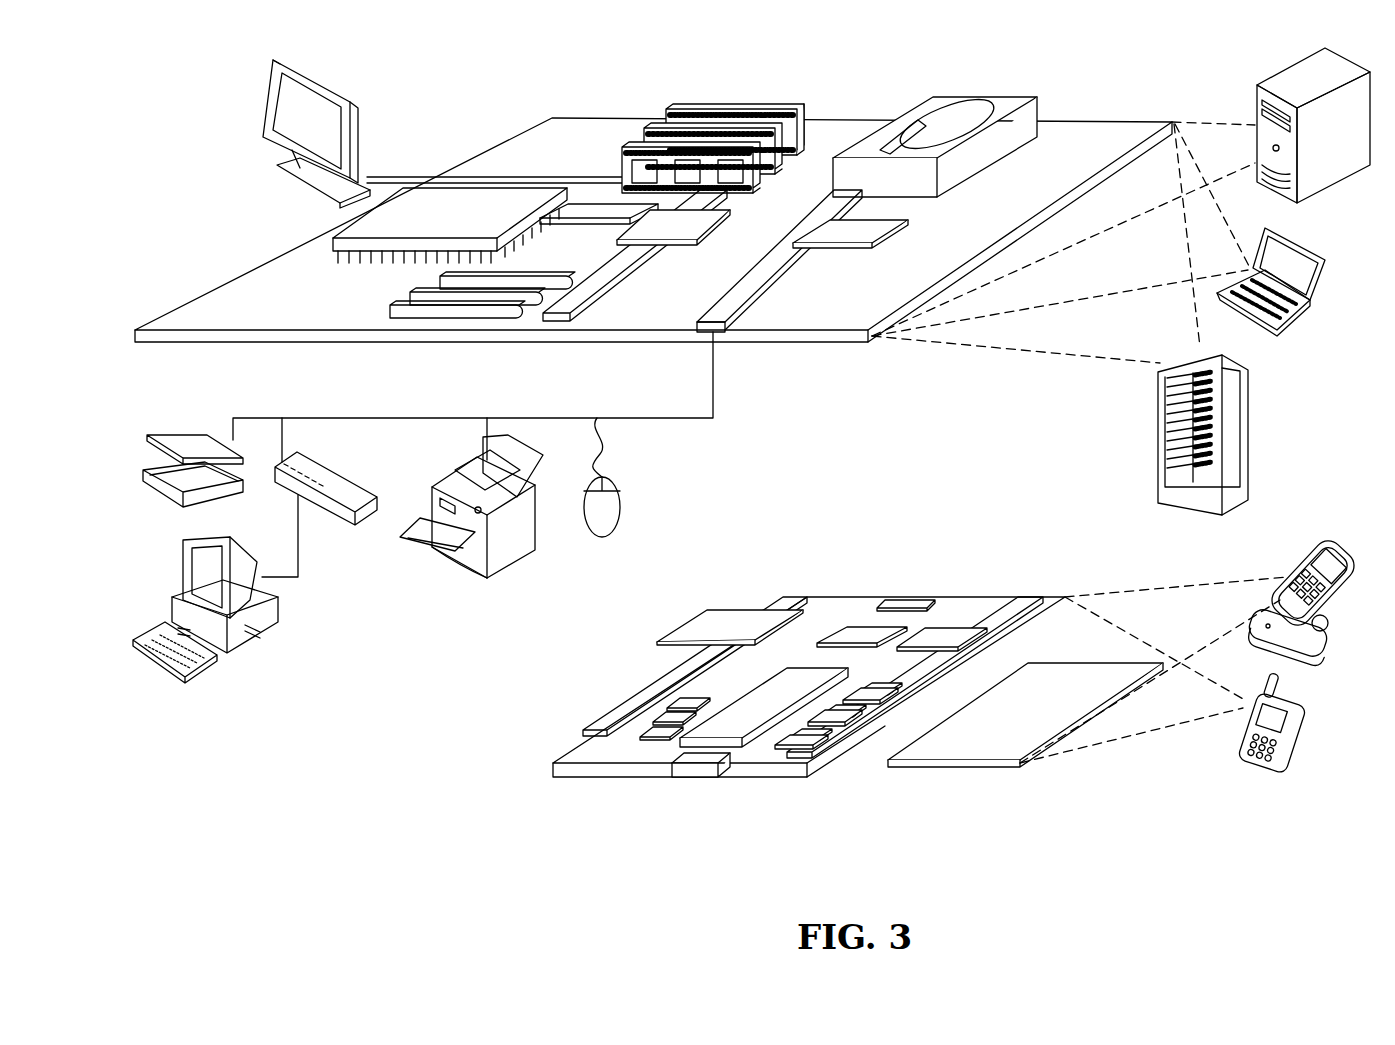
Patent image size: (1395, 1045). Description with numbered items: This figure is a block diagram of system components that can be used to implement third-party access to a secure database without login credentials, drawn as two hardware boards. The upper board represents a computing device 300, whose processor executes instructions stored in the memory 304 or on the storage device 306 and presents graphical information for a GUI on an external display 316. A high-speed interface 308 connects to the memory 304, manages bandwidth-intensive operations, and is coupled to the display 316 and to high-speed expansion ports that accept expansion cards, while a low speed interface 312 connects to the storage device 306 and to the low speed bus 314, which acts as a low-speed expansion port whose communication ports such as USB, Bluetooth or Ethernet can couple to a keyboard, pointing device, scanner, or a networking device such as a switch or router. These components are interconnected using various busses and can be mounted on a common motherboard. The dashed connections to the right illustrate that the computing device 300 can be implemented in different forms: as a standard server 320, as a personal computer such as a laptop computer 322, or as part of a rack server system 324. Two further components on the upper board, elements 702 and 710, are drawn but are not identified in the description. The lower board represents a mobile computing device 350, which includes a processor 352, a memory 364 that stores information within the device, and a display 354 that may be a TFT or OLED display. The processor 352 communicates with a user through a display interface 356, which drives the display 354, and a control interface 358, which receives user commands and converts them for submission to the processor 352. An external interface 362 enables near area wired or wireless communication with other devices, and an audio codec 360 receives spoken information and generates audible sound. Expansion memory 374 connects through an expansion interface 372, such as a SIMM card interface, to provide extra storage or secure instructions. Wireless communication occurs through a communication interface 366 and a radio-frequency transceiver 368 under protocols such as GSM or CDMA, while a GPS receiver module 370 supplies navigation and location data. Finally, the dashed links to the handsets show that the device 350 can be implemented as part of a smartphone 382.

The computing device 300 is at (466, 88).
The memory 304 is at (730, 108).
The storage device 306 is at (927, 94).
The high-speed interface 308 is at (648, 224).
The low speed interface 312 is at (837, 232).
The low speed bus 314 is at (727, 333).
The display 316 is at (273, 62).
The standard server 320 is at (1257, 98).
The laptop computer 322 is at (1277, 330).
The rack server system 324 is at (1158, 460).
The computing device 350 is at (526, 775).
The processor 352 is at (737, 730).
The display 354 is at (983, 750).
The display interface 356 is at (803, 740).
The control interface 358 is at (840, 724).
The audio codec 360 is at (868, 696).
The external interface 362 is at (700, 777).
The memory 364 is at (650, 722).
The communication interface 366 is at (855, 637).
The transceiver 368 is at (938, 637).
The GPS receiver module 370 is at (908, 597).
The expansion interface 372 is at (780, 610).
The expansion memory 374 is at (696, 612).
The smartphone 382 is at (1242, 740).
The processor 702 is at (333, 241).
The memory chips 710 is at (418, 300).